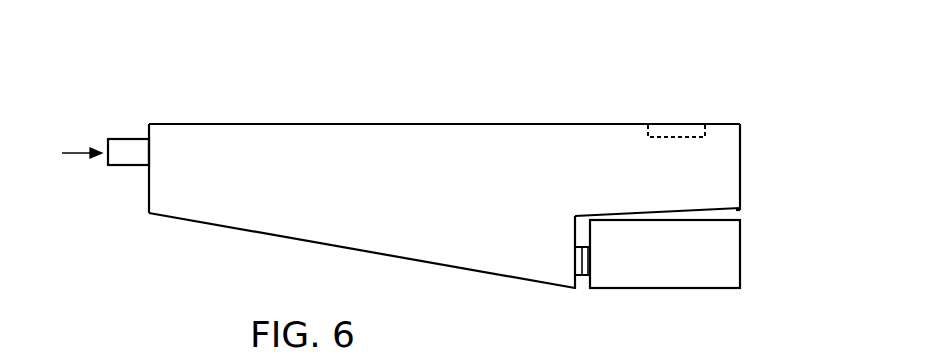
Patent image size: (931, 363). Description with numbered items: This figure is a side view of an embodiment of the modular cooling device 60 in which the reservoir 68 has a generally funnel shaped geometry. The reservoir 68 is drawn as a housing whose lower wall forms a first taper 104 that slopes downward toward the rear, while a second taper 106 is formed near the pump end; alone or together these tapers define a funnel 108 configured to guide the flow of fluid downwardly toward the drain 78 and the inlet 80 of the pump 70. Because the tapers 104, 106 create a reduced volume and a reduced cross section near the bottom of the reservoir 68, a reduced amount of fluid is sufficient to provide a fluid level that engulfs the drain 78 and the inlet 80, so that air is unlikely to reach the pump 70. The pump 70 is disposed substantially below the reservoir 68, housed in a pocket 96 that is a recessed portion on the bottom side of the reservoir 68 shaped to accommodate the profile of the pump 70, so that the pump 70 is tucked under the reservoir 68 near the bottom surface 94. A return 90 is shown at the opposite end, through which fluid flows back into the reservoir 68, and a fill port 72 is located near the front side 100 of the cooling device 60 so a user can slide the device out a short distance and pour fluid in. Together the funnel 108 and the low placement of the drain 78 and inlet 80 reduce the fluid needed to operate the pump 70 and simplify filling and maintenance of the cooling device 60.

The modular cooling device 60 is at (690, 60).
The reservoir 68 is at (383, 124).
The pump 70 is at (713, 288).
The fill port 72 is at (673, 124).
The drain 78 is at (576, 261).
The inlet 80 is at (588, 256).
The return 90 is at (137, 139).
The bottom surface 94 is at (337, 248).
The pocket 96 is at (740, 209).
The front side 100 is at (740, 192).
The first taper 104 is at (230, 222).
The second taper 106 is at (676, 212).
The funnel 108 is at (535, 294).